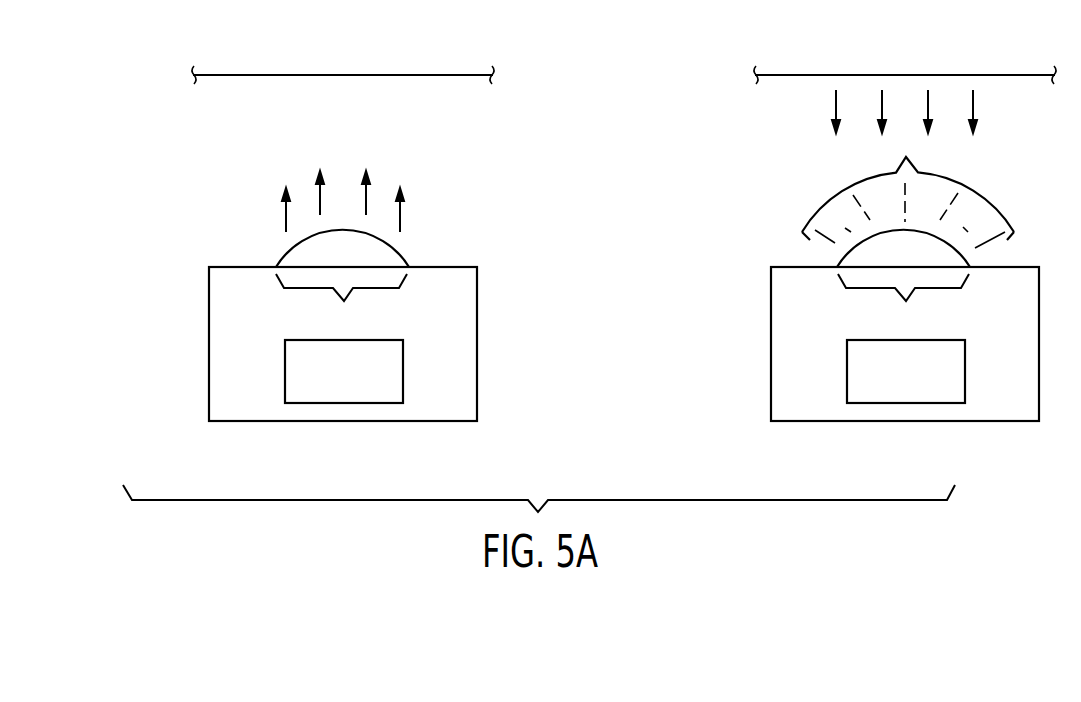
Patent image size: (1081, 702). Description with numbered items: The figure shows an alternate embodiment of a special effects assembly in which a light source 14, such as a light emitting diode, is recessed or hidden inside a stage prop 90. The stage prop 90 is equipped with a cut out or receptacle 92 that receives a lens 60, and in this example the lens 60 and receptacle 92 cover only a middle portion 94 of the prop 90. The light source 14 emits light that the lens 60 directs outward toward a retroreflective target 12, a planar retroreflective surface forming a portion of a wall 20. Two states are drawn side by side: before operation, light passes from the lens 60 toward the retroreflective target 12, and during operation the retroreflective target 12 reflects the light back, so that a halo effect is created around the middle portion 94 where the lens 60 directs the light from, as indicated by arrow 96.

The retroreflective target 12 is at (343, 75).
The wall 20 is at (624, 61).
The light source 14 is at (403, 372).
The lens 60 is at (403, 246).
The stage prop 90 is at (477, 345).
The receptacle 92 is at (622, 304).
The middle portion 94 is at (236, 213).
The arrow 96 is at (908, 189).